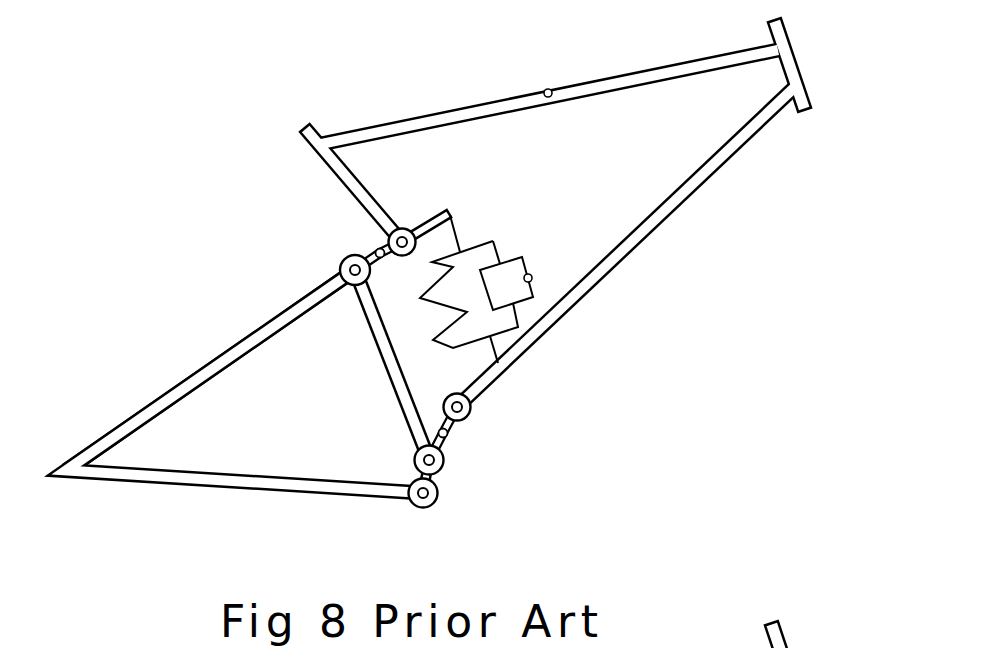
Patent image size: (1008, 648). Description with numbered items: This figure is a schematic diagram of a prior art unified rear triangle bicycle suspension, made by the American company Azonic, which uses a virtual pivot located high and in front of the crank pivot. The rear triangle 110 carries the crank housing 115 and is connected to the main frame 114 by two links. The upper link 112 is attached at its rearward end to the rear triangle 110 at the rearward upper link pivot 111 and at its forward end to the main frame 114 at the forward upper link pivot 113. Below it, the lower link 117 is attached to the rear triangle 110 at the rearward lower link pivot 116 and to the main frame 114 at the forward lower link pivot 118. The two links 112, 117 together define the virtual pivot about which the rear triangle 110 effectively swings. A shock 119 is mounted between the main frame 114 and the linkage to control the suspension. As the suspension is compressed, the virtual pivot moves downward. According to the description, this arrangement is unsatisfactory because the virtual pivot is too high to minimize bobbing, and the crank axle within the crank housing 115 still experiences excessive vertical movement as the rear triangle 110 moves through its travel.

The rear triangle 110 is at (200, 370).
The rearward upper link pivot 111 is at (350, 269).
The upper link 112 is at (284, 215).
The forward upper link pivot 113 is at (349, 147).
The main frame 114 is at (547, 90).
The crank housing 115 is at (484, 521).
The rearward lower link pivot 116 is at (496, 479).
The lower link 117 is at (447, 434).
The forward lower link pivot 118 is at (462, 406).
The shock 119 is at (532, 278).